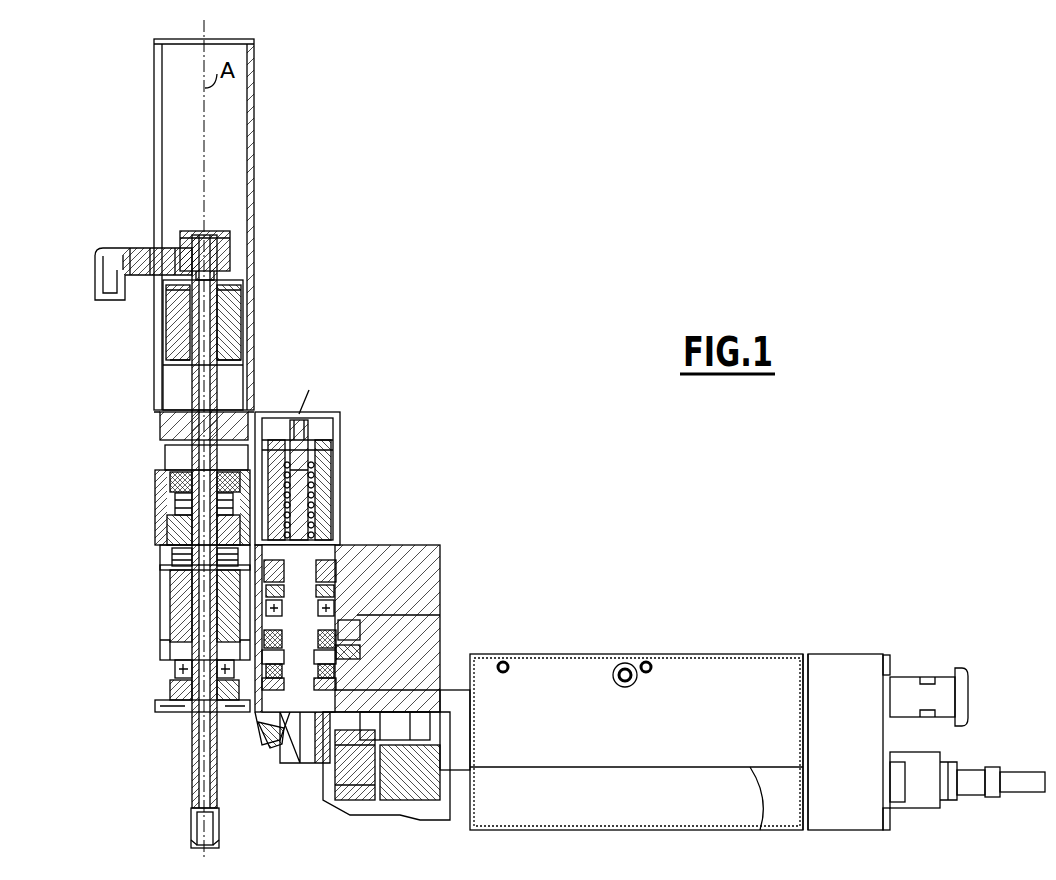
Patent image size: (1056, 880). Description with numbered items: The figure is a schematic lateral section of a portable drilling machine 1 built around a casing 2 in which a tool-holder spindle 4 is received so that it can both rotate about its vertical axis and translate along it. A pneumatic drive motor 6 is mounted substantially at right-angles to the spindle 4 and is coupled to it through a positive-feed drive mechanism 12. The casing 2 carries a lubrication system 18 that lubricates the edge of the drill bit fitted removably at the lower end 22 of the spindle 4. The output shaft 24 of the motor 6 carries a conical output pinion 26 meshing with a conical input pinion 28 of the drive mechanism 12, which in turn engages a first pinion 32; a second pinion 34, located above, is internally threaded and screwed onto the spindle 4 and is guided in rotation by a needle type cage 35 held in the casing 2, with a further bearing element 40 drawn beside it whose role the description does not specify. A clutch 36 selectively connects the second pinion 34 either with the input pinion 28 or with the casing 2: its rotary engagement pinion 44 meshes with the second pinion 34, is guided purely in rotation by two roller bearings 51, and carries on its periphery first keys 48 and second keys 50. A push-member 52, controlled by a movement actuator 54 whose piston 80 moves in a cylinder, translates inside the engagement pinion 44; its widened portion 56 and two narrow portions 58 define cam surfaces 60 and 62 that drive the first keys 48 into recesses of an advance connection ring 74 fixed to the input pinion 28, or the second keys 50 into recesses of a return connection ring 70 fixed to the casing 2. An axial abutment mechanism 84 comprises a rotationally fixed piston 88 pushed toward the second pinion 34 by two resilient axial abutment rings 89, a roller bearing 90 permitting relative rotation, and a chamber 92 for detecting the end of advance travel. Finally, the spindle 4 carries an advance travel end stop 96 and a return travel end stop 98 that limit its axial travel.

The portable drilling machine 1 is at (438, 444).
The casing 2 is at (398, 556).
The tool-holder spindle 4 is at (195, 735).
The drive motor 6 is at (722, 692).
The drive mechanism 12 is at (297, 760).
The lubrication system 18 is at (108, 250).
The lower end 22 is at (192, 826).
The output shaft 24 is at (420, 782).
The conical output pinion 26 is at (348, 776).
The conical input pinion 28 is at (293, 756).
The first pinion 32 is at (178, 681).
The second pinion 34 is at (170, 626).
The needle type cage 35 is at (178, 590).
The clutch 36 is at (340, 628).
The upper bearing 40 is at (178, 570).
The rotary engagement pinion 44 is at (340, 645).
The first keys 48 is at (320, 662).
The second keys 50 is at (298, 590).
The roller bearings 51 is at (345, 612).
The push-member 52 is at (304, 480).
The movement actuator 54 is at (336, 396).
The widened portion 56 is at (360, 600).
The narrow portions 58 is at (378, 635).
The cam surface 60 is at (358, 612).
The cam surface 62 is at (316, 522).
The return connection ring 70 is at (271, 440).
The advance connection ring 74 is at (275, 740).
The piston 80 is at (331, 450).
The axial abutment mechanism 84 is at (114, 548).
The piston 88 is at (178, 497).
The resilient axial abutment rings 89 is at (169, 483).
The roller bearing 90 is at (175, 552).
The end-of-advance-travel detection chamber 92 is at (178, 512).
The advance travel end stop 96 is at (175, 328).
The return travel end stop 98 is at (170, 712).